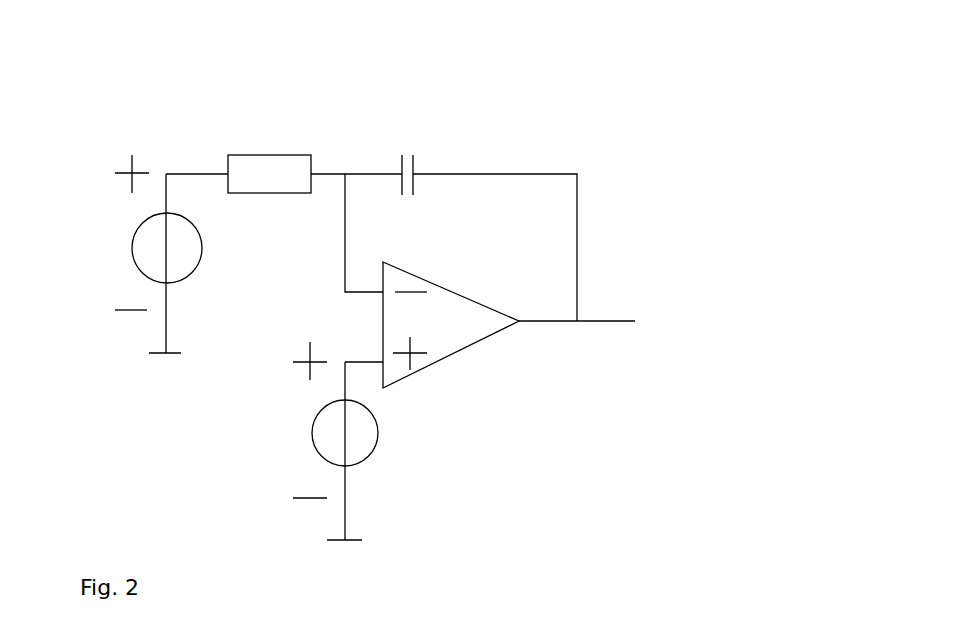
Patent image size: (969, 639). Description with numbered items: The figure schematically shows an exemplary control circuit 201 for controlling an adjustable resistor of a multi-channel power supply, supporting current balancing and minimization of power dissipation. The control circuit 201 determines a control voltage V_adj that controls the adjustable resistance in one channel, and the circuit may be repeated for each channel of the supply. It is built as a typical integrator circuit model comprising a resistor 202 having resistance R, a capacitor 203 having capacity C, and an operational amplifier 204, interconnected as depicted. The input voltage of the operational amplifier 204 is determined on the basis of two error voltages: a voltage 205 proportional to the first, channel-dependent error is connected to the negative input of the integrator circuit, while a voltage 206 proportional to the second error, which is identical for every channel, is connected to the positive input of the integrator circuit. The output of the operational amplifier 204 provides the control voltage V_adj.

The control circuit 201 is at (512, 88).
The resistor 202 is at (230, 155).
The capacitor 203 is at (392, 163).
The operational amplifier 204 is at (460, 337).
The voltage proportional to err1 205 is at (137, 253).
The voltage proportional to err2 206 is at (322, 442).